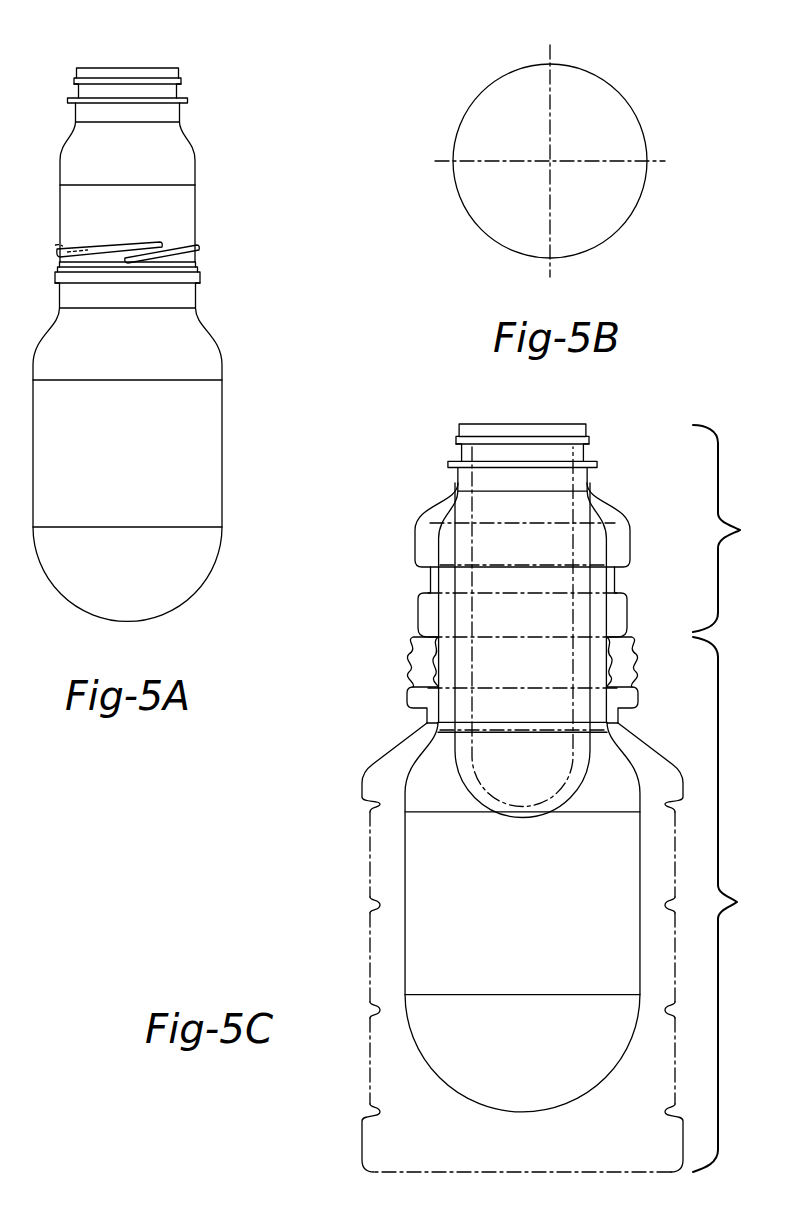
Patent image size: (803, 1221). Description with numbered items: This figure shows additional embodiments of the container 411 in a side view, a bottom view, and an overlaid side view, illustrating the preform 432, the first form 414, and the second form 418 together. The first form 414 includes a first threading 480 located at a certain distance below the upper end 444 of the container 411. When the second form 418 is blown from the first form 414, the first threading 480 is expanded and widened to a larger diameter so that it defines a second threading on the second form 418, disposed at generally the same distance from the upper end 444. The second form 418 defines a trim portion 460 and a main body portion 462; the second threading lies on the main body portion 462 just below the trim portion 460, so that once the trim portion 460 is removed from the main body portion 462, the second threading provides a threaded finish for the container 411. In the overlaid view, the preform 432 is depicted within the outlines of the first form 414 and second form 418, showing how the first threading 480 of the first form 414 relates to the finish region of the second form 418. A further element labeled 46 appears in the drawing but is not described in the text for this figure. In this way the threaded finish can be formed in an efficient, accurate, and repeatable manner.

In FIG. 5C, the container 411 is at (470, 383).
In FIG. 5A, the first form 414 is at (70, 78).
In FIG. 5B, the first form 414 is at (604, 78).
In FIG. 5C, the first form 414 is at (410, 763).
In FIG. 5C, the second form 418 is at (369, 940).
In FIG. 5C, the preform 432 is at (588, 612).
In FIG. 5A, the upper end 444 is at (161, 50).
In FIG. 5C, the upper end 444 is at (480, 427).
In FIG. 5C, the neck finish 46 is at (412, 680).
In FIG. 5C, the trim portion 460 is at (733, 528).
In FIG. 5C, the main body portion 462 is at (732, 904).
In FIG. 5A, the first threading 480 is at (160, 245).
In FIG. 5C, the first threading 480 is at (430, 652).